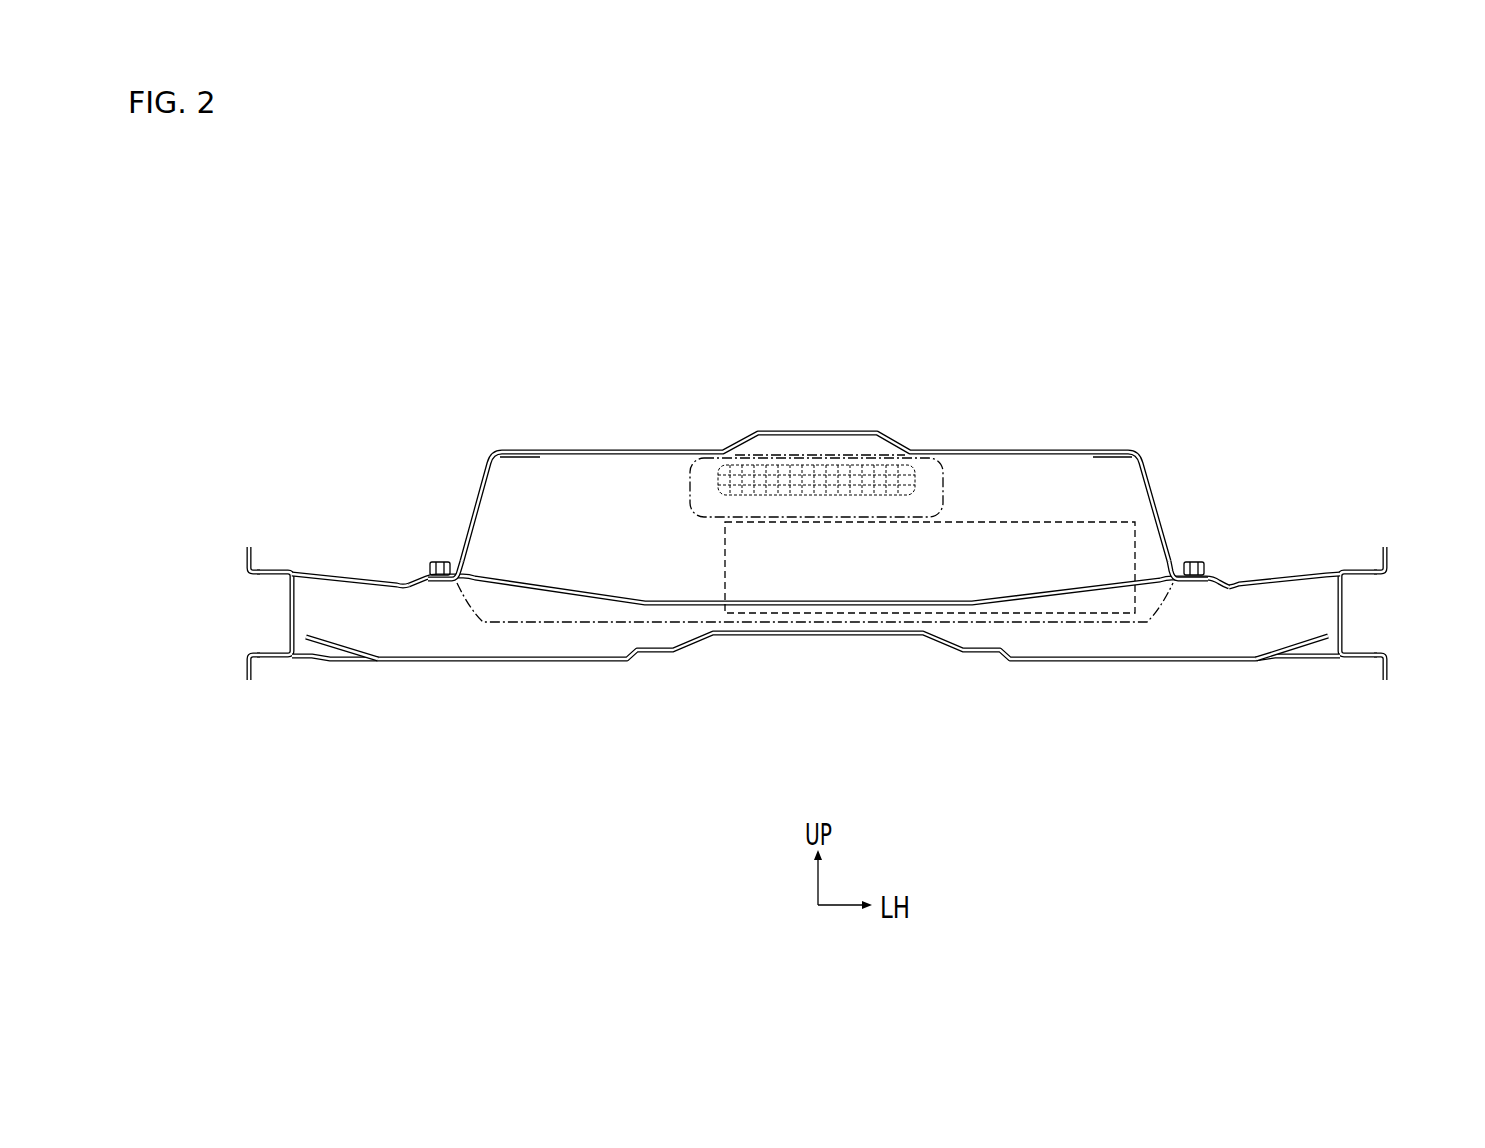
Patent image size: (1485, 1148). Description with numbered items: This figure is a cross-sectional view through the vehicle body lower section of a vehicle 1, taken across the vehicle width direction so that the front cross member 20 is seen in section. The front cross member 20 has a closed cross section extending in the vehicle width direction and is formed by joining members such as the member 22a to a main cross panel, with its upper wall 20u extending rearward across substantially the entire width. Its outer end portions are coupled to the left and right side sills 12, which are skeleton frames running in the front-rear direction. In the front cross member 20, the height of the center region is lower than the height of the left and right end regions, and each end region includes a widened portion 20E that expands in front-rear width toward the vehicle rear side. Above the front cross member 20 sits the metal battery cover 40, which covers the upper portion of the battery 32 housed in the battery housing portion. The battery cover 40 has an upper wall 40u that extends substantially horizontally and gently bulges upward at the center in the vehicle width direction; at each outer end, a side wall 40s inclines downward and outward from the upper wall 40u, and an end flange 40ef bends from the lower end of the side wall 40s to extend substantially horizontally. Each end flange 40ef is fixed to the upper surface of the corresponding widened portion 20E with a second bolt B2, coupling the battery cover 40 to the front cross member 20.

The vehicle 1 is at (1203, 375).
The side sill 12 is at (238, 557).
The front cross member 20 is at (1281, 566).
The widened portion 20E is at (332, 572).
The upper wall 20u is at (392, 582).
The member 22a is at (1198, 660).
The battery 32 is at (977, 520).
The battery cover 40 is at (1012, 440).
The upper wall 40u is at (650, 450).
The side wall 40s is at (486, 485).
The end flange 40ef is at (455, 575).
The second bolt B2 is at (438, 562).